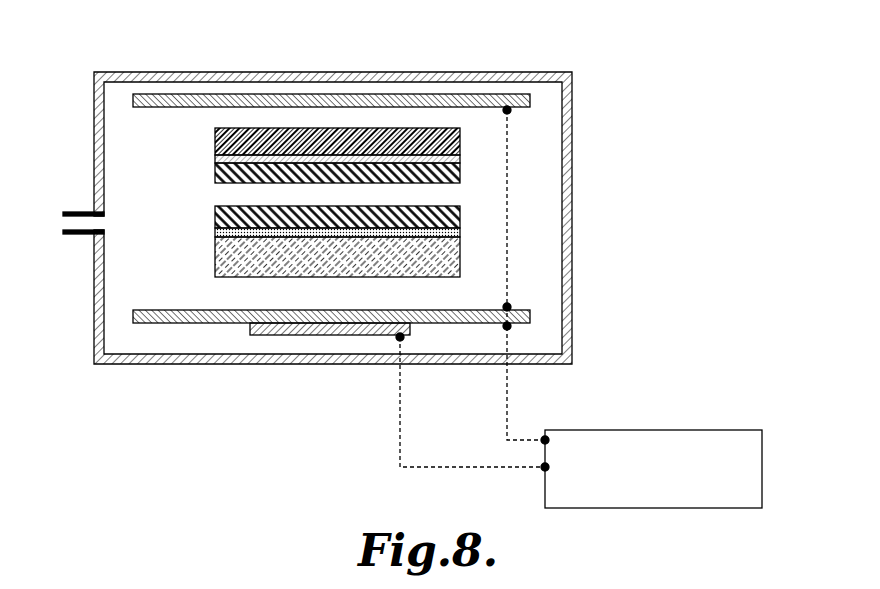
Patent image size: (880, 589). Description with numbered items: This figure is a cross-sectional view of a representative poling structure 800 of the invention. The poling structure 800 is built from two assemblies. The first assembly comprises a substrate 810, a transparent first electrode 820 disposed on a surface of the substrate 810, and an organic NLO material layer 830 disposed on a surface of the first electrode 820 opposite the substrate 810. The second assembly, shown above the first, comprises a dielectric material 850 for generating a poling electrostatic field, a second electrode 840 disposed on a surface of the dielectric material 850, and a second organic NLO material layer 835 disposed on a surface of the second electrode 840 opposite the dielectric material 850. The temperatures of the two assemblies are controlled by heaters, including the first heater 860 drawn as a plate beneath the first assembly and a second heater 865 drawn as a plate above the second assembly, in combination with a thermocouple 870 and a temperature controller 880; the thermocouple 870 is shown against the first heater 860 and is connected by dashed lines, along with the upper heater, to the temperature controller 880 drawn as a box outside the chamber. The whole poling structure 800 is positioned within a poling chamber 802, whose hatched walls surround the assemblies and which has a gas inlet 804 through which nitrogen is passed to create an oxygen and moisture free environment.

The poling structure 800 is at (351, 219).
The poling chamber 802 is at (305, 364).
The gas inlet 804 is at (75, 222).
The substrate 810 is at (215, 265).
The transparent first electrode 820 is at (215, 232).
The organic NLO material layer 830 is at (215, 210).
The second organic NLO material layer 835 is at (215, 170).
The second electrode 840 is at (438, 158).
The dielectric material 850 is at (215, 137).
The first heater 860 is at (185, 311).
The upper electrode plate 865 is at (207, 99).
The thermocouple 870 is at (250, 331).
The temperature controller 880 is at (762, 458).